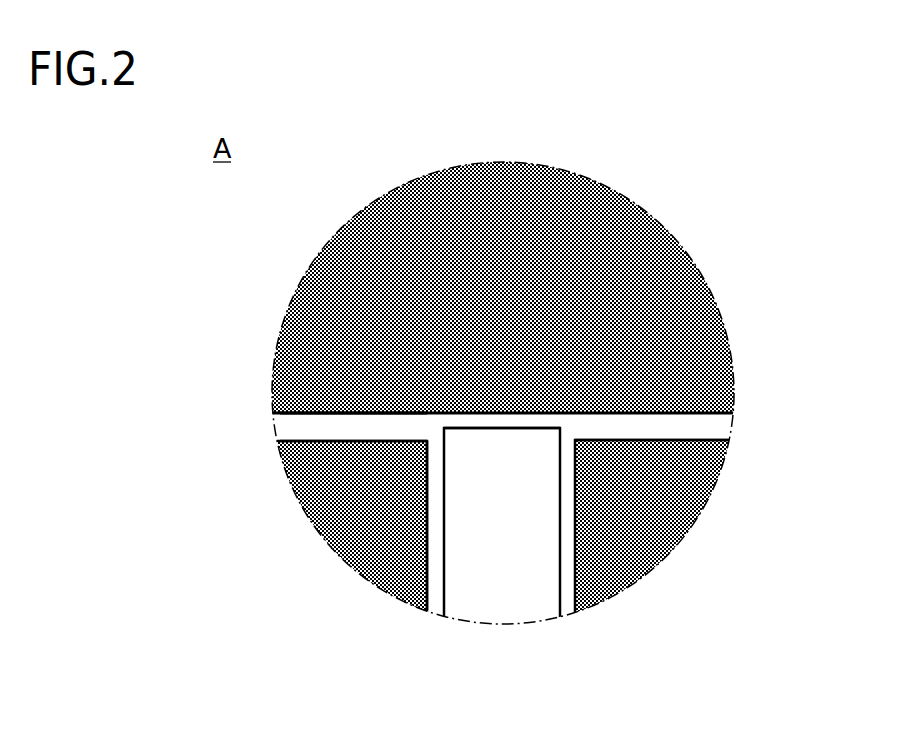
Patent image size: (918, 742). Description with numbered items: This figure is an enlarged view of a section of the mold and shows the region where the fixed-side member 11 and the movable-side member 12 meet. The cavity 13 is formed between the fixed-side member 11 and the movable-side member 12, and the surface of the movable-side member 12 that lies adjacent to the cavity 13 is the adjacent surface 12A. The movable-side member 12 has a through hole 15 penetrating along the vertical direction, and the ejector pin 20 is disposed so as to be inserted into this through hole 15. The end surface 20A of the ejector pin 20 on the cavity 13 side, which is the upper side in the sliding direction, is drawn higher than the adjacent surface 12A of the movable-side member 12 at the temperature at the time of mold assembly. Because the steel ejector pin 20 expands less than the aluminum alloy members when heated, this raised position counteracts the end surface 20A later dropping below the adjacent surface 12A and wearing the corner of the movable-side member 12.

The fixed-side member 11 is at (333, 258).
The movable-side member 12 is at (323, 528).
The adjacent surface 12A is at (702, 440).
The cavity 13 is at (290, 430).
The through hole 15 is at (440, 483).
The ejector pin 20 is at (508, 605).
The end surface 20A is at (533, 426).